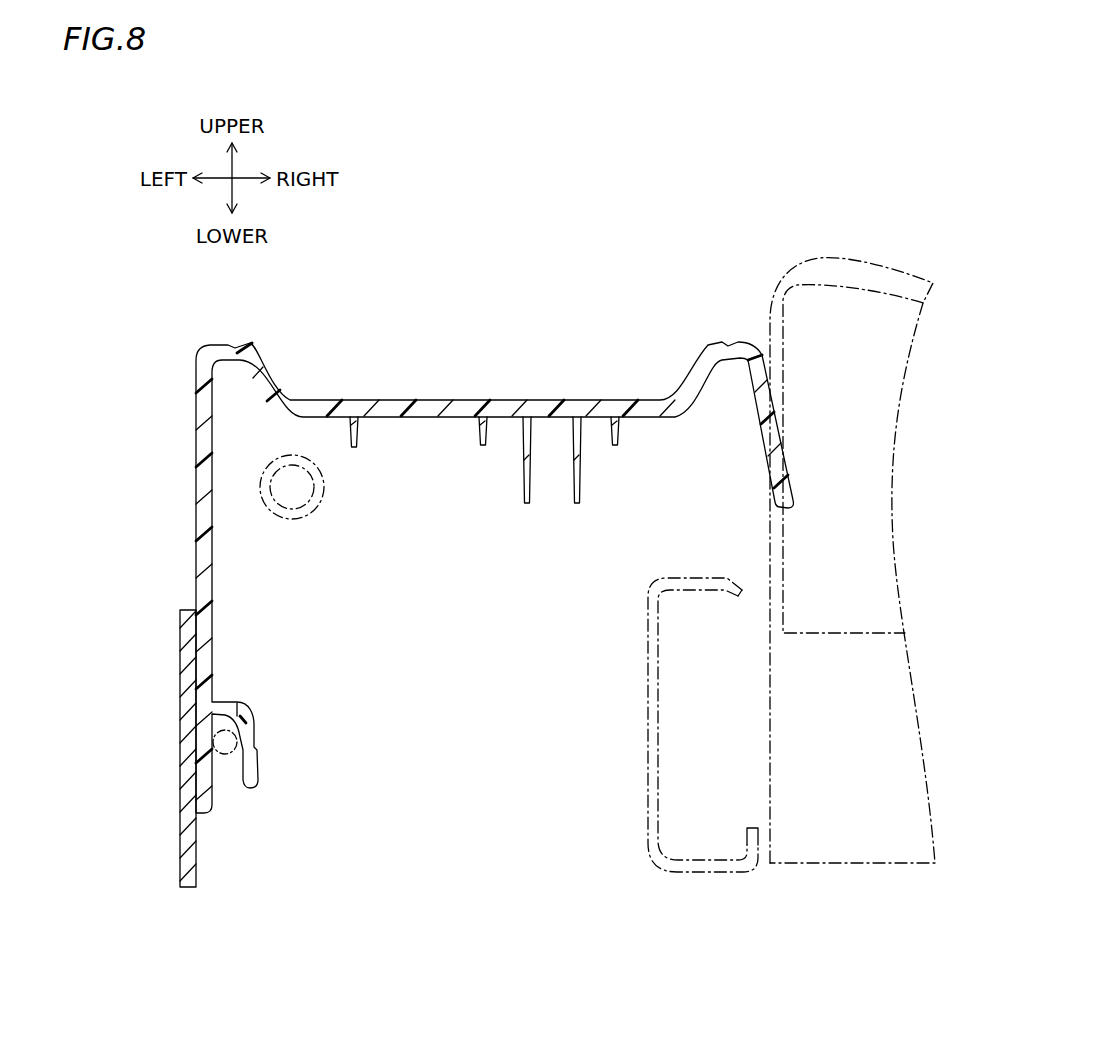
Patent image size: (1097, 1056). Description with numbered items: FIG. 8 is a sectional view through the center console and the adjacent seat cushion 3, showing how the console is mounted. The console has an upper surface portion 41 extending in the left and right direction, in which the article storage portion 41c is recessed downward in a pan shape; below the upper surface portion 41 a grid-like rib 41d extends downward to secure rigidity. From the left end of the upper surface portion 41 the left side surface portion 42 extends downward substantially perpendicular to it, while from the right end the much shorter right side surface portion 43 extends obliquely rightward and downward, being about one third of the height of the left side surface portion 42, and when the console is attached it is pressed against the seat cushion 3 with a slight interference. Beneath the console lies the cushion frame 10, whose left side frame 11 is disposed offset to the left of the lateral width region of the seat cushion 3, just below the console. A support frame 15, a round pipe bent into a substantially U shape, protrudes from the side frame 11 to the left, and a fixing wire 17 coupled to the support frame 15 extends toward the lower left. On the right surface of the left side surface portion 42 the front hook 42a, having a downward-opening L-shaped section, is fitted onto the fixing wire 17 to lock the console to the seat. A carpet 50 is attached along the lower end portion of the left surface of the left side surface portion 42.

The seat cushion 3 is at (840, 258).
The cushion frame 10 is at (635, 725).
The side frame 11 is at (647, 690).
The support frame 15 is at (293, 522).
The fixing wire 17 is at (226, 748).
The upper surface portion 41 is at (489, 562).
The article storage portion 41c is at (427, 400).
The grid-like rib 41d is at (527, 462).
The left side surface portion 42 is at (195, 517).
The front hook 42a is at (252, 735).
The right side surface portion 43 is at (783, 422).
The carpet 50 is at (179, 818).